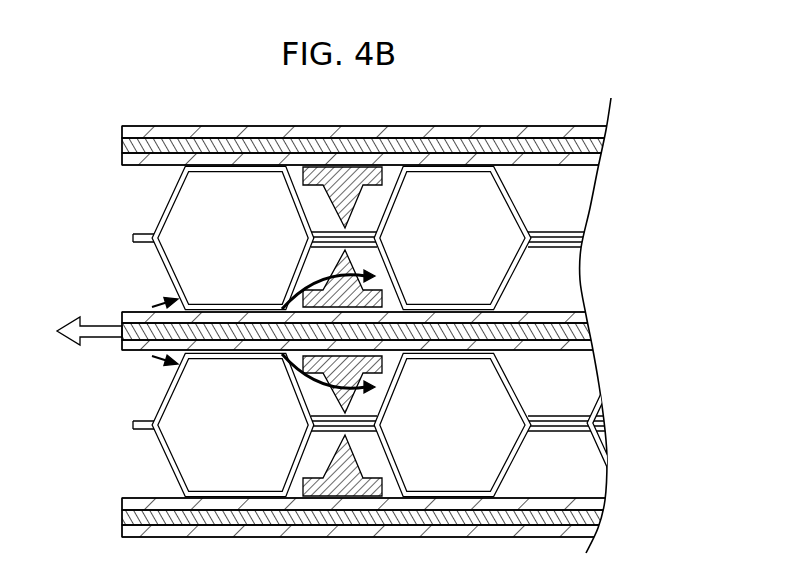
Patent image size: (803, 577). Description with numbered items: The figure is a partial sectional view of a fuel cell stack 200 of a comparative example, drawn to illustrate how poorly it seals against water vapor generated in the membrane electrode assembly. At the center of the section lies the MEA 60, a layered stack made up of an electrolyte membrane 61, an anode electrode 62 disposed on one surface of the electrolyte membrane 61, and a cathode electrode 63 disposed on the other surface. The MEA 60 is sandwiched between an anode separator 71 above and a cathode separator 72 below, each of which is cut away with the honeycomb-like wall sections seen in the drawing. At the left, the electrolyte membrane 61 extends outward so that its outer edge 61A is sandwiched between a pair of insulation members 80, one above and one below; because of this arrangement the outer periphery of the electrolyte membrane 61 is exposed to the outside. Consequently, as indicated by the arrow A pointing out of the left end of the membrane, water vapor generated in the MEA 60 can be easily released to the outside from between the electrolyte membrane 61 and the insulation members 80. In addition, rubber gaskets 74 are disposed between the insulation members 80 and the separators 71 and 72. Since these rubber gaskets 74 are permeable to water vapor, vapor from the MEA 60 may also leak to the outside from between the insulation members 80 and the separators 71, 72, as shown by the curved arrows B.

The fuel cell stack 200 is at (650, 133).
The MEA 60 is at (384, 334).
The electrolyte membrane 61 is at (591, 331).
The outer edge of the electrolyte membrane 61A is at (120, 350).
The anode electrode 62 is at (588, 315).
The cathode electrode 63 is at (593, 344).
The anode separator 71 is at (452, 305).
The cathode separator 72 is at (456, 357).
The rubber gasket 74 is at (397, 297).
The insulation member 80 is at (138, 312).
The arrow A is at (94, 322).
The arrow B is at (244, 306).